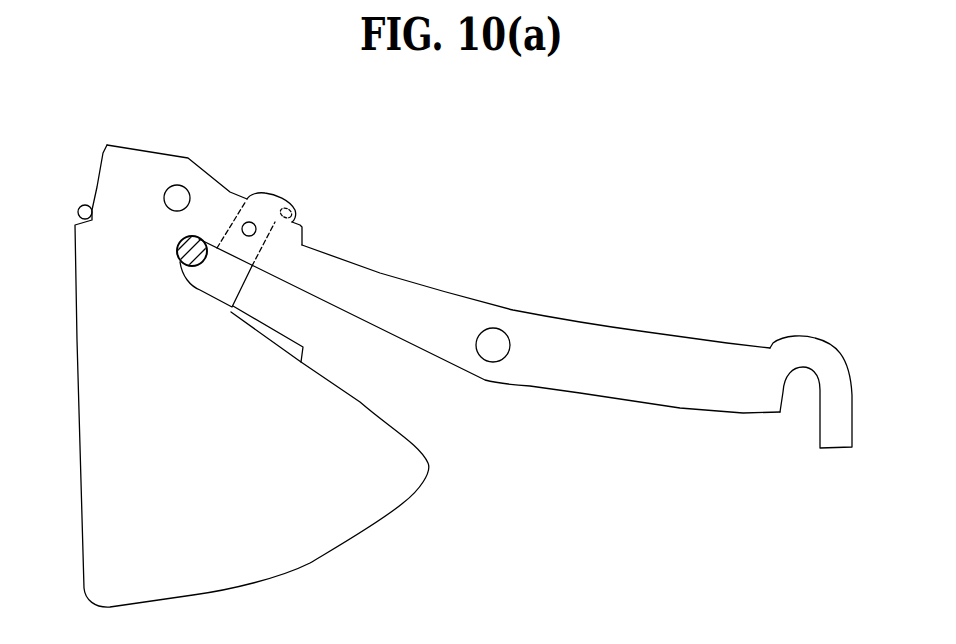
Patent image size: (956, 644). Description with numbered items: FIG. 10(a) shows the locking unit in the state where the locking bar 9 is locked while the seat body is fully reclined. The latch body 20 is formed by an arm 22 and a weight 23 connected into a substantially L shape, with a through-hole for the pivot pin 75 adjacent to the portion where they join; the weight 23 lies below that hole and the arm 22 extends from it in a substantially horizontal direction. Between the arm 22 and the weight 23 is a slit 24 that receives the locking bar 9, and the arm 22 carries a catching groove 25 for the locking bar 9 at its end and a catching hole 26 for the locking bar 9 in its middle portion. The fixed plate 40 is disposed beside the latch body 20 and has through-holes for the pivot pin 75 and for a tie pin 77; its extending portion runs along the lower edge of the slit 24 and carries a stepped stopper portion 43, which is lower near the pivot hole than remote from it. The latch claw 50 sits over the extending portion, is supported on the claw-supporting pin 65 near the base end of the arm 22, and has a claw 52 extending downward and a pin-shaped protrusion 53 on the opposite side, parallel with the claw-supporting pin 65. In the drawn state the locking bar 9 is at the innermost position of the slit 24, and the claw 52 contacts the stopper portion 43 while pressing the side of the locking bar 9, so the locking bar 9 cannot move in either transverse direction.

The locking bar 9 is at (177, 254).
The latch body 20 is at (460, 282).
The arm 22 is at (643, 345).
The weight 23 is at (297, 550).
The slit 24 is at (408, 394).
The catching groove 25 is at (802, 398).
The catching hole 26 is at (500, 350).
The fixed plate 40 is at (307, 347).
The stopper portion 43 is at (238, 312).
The latch claw 50 is at (265, 193).
The claw 52 is at (215, 290).
The pin-shaped protrusion 53 is at (295, 203).
The claw-supporting pin 65 is at (256, 231).
The pivot pin 75 is at (178, 194).
The tie pin 77 is at (83, 205).